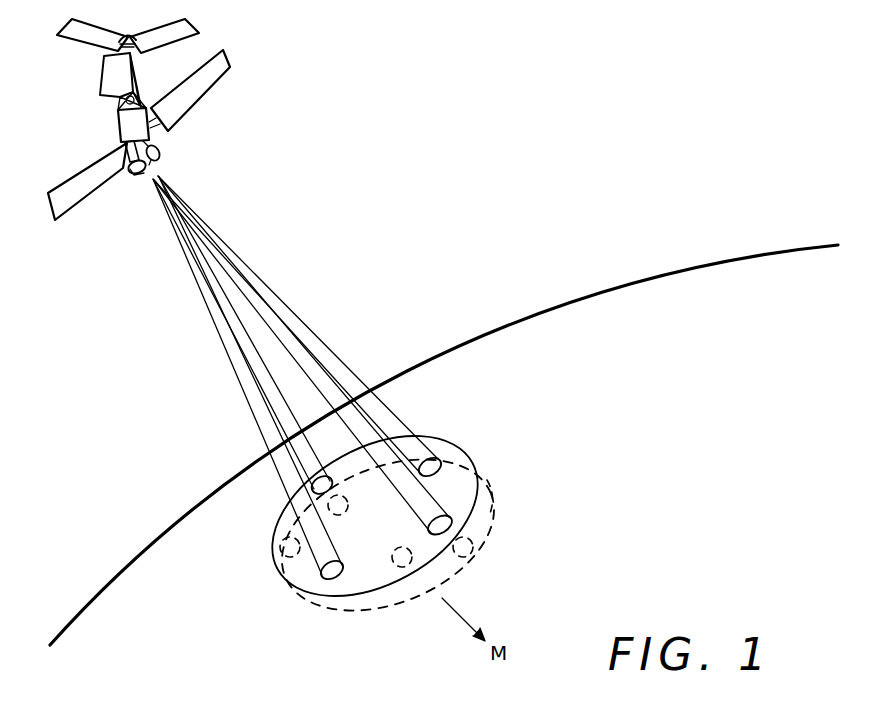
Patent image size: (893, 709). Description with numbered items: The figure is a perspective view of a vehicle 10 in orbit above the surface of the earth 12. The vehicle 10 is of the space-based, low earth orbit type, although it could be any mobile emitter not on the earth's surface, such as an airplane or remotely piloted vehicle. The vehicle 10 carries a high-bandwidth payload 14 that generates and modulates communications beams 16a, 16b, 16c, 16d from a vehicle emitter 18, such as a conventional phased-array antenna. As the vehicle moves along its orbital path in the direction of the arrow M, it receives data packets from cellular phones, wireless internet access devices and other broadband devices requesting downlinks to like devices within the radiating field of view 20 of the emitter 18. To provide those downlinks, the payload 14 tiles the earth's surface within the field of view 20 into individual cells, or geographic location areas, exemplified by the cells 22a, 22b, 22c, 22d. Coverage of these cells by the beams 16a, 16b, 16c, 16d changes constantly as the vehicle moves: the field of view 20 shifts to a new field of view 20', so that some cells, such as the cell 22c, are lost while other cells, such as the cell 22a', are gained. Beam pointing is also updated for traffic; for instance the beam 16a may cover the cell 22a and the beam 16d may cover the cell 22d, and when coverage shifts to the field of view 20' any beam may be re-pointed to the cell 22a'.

The vehicle 10 is at (266, 49).
The earth 12 is at (500, 311).
The high-bandwidth payload 14 is at (97, 163).
The vehicle emitter 18 is at (137, 175).
The communications beam 16a is at (313, 333).
The communications beam 16b is at (404, 500).
The communications beam 16c is at (290, 414).
The communications beam 16d is at (233, 378).
The radiating field of view 20 is at (365, 516).
The shifted field of view 20' is at (388, 546).
The cell 22a is at (469, 454).
The cell 22b is at (492, 498).
The cell 22c is at (333, 478).
The cell 22d is at (310, 597).
The gained cell 22a' is at (501, 561).